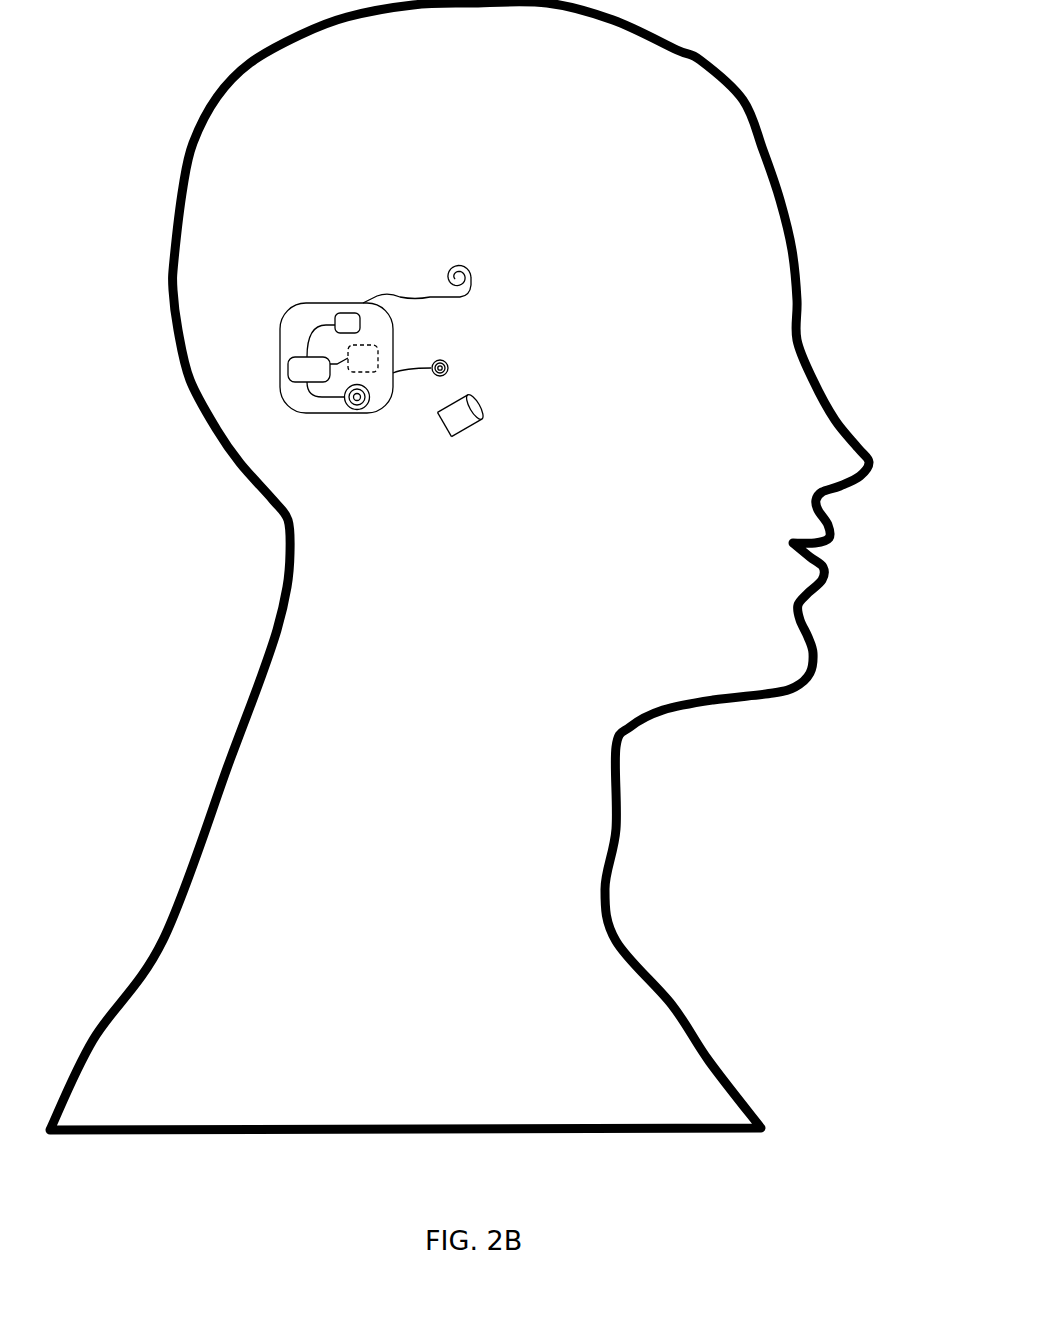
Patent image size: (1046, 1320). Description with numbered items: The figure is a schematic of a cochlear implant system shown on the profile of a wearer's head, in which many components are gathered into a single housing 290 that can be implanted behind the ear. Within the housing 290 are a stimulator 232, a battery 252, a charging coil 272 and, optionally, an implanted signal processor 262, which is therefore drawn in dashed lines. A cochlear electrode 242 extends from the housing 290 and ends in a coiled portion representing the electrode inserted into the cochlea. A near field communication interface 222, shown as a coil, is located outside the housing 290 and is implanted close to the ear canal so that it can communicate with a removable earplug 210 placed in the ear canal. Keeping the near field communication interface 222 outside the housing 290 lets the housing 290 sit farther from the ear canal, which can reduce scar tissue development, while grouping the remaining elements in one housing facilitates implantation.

The removable earplug 210 is at (483, 436).
The near field communication interface 222 is at (447, 361).
The stimulator 232 is at (347, 313).
The cochlear electrode 242 is at (472, 267).
The battery 252 is at (286, 370).
The implanted signal processor 262 is at (374, 344).
The charging coil 272 is at (366, 407).
The housing 290 is at (307, 417).